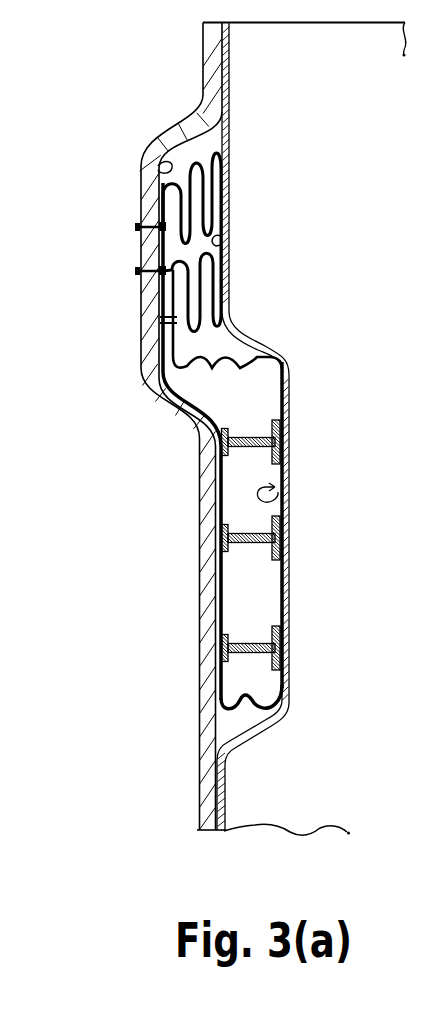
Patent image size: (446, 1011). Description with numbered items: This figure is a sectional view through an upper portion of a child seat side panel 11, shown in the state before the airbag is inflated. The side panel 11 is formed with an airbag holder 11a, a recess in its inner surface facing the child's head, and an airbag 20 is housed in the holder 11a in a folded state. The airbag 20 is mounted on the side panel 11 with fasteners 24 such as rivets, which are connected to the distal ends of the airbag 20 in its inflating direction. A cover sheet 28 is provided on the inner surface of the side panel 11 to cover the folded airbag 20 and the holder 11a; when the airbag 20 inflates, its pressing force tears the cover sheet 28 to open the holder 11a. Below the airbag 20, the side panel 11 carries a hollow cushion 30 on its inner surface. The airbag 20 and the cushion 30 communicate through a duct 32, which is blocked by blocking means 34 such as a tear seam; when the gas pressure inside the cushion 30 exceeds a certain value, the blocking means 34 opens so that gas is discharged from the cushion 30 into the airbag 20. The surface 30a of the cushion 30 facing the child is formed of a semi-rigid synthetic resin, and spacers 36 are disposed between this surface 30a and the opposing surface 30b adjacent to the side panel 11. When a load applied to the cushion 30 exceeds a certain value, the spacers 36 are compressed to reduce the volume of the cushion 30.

The side panel 11 is at (203, 75).
The airbag holder 11a is at (158, 168).
The cover sheet 28 is at (229, 126).
The airbag 20 is at (222, 241).
The fastener 24 is at (136, 227).
The blocking means 34 is at (159, 316).
The duct 32 is at (141, 337).
The cushion 30 is at (289, 494).
The surface of the cushion facing the child 30a is at (278, 594).
The opposing surface of the cushion 30b is at (222, 584).
The spacer 36 is at (250, 436).